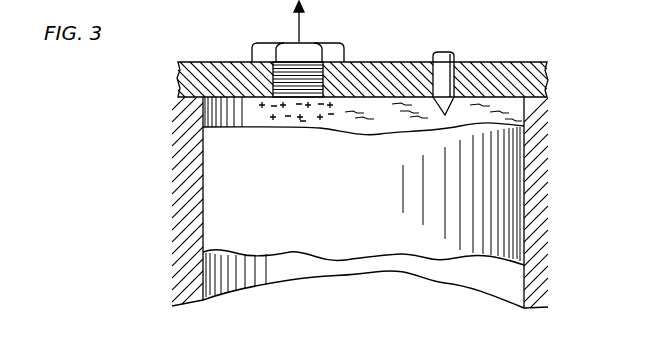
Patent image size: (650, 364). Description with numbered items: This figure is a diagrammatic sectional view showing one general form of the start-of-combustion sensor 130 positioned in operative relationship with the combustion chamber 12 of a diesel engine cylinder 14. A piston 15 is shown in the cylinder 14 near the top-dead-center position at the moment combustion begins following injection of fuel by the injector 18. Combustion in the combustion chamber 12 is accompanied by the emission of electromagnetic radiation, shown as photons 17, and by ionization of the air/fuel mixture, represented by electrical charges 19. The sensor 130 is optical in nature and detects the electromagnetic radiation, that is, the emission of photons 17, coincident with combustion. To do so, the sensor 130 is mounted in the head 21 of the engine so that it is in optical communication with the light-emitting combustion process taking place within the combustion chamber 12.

The combustion chamber 12 is at (510, 118).
The cylinder 14 is at (199, 180).
The piston 15 is at (377, 213).
The photons 17 is at (370, 122).
The injector 18 is at (448, 58).
The electrical charges 19 is at (287, 120).
The head 21 is at (212, 62).
The SOC sensor 130 is at (337, 46).